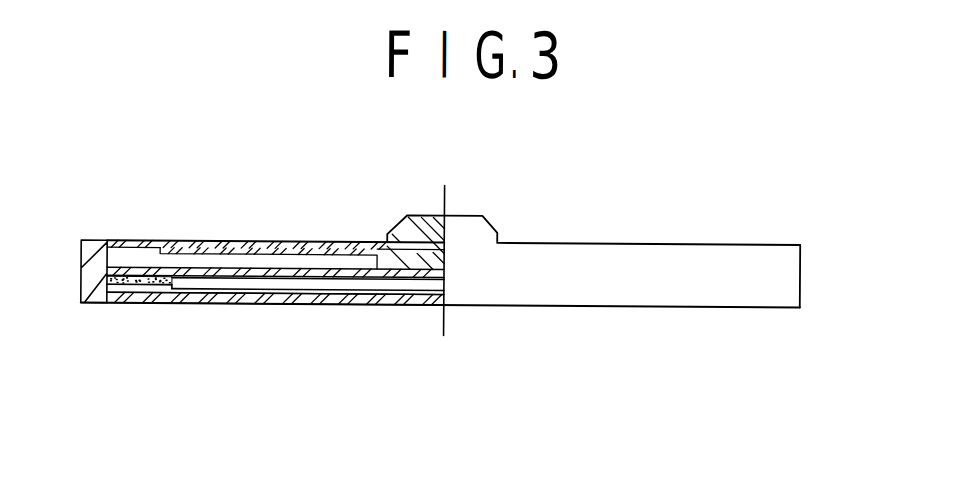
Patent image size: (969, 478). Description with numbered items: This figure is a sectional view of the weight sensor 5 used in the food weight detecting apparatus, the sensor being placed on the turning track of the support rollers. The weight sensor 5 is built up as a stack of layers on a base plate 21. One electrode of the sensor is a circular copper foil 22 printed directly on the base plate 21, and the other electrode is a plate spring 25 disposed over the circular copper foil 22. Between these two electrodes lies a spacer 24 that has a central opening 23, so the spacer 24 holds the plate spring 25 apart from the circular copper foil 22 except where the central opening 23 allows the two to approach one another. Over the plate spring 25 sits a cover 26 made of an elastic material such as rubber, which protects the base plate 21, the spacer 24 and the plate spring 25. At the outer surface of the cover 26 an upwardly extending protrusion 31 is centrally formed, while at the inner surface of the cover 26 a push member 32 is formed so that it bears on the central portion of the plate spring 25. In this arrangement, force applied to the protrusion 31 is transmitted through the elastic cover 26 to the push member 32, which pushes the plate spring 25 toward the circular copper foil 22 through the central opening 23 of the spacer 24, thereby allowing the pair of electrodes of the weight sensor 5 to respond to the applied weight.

The weight sensor 5 is at (201, 236).
The base plate 21 is at (331, 290).
The circular copper foil 22 is at (395, 300).
The central opening 23 is at (245, 285).
The spacer 24 is at (118, 297).
The plate spring 25 is at (256, 267).
The cover 26 is at (331, 253).
The protrusion 31 is at (533, 256).
The push member 32 is at (418, 228).